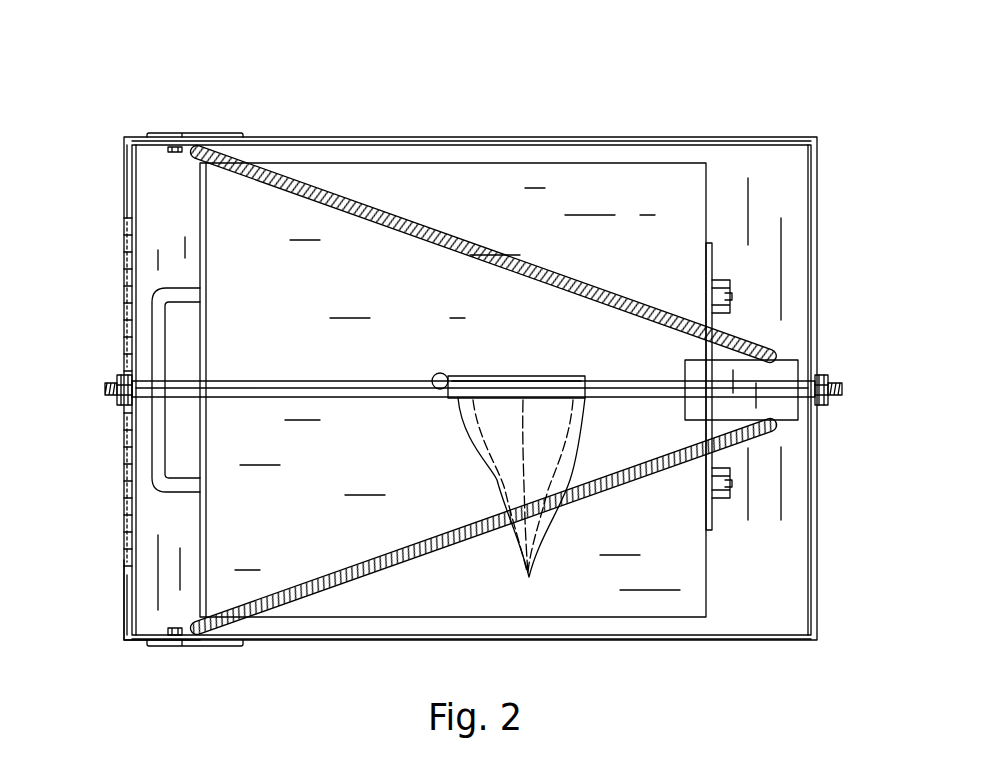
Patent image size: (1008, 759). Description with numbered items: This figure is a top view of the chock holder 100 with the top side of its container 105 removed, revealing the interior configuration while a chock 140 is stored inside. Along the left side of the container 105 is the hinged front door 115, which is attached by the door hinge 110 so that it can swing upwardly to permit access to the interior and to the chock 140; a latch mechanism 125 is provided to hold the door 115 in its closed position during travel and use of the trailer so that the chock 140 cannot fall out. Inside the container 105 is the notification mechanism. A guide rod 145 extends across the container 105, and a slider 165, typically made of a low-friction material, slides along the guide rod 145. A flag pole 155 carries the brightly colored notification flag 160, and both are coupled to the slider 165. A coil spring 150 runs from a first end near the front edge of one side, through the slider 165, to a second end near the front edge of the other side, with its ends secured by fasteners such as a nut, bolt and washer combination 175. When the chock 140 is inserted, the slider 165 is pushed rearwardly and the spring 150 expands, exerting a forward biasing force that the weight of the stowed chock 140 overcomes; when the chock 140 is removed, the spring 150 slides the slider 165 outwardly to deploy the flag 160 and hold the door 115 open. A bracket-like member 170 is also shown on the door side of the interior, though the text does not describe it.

The chock holder 100 is at (272, 71).
The container 105 is at (780, 137).
The door hinge 110 is at (124, 247).
The front door 115 is at (125, 585).
The latch mechanism 125 is at (157, 647).
The chock 140 is at (525, 163).
The guide rod 145 is at (392, 385).
The coil spring 150 is at (572, 282).
The flag pole 155 is at (622, 378).
The notification flag 160 is at (508, 455).
The slider 165 is at (772, 385).
The Bracket handle 170 is at (158, 301).
The nut, bolt and washer combination 175 is at (178, 147).